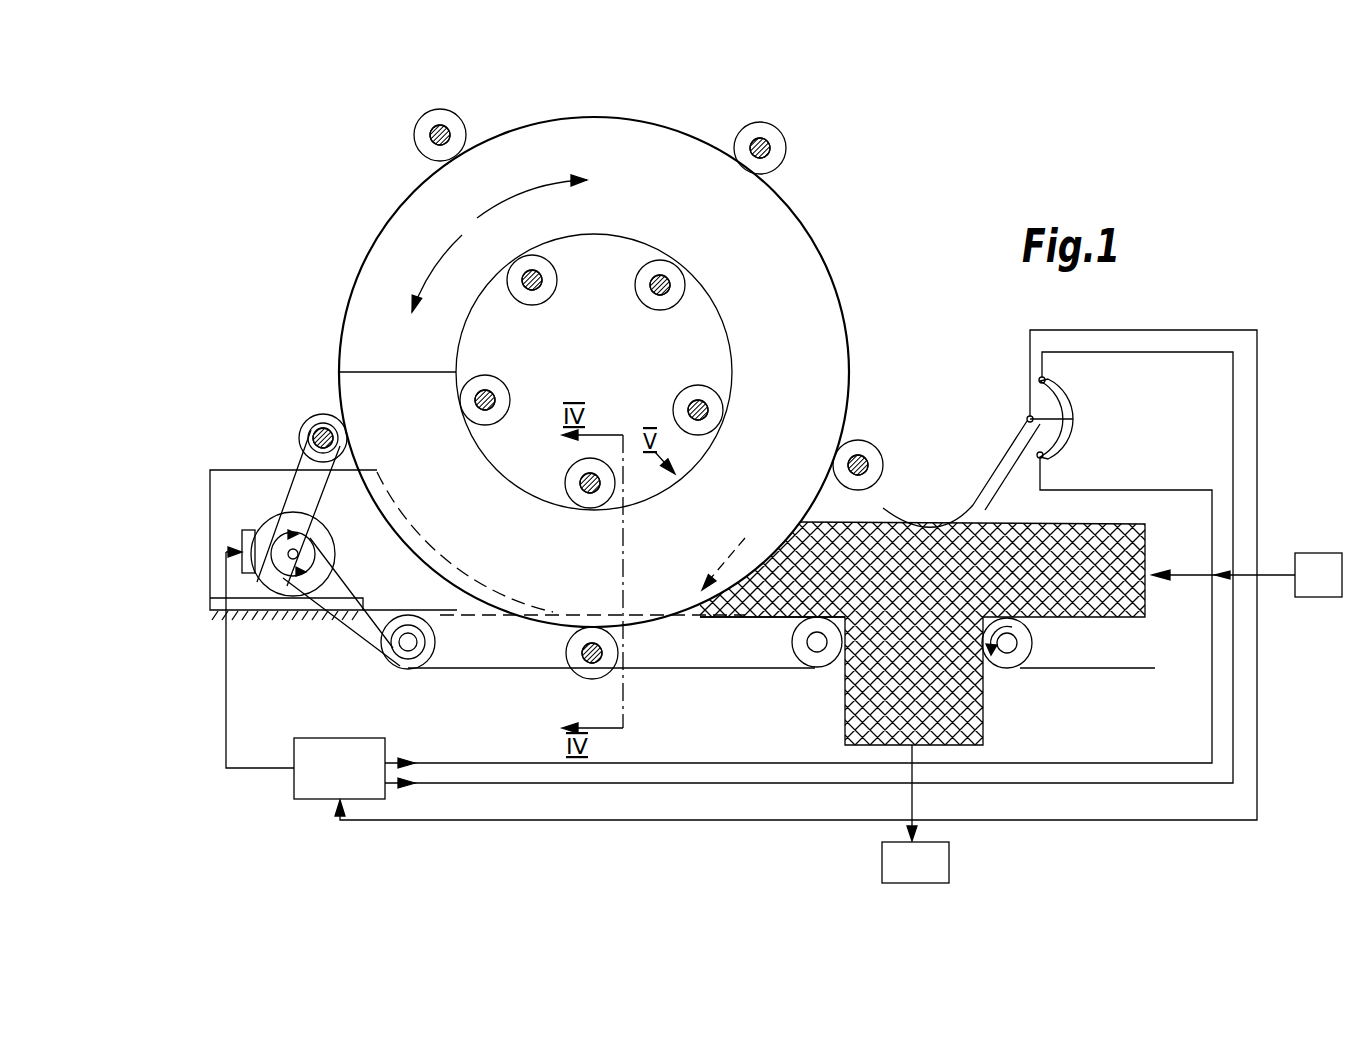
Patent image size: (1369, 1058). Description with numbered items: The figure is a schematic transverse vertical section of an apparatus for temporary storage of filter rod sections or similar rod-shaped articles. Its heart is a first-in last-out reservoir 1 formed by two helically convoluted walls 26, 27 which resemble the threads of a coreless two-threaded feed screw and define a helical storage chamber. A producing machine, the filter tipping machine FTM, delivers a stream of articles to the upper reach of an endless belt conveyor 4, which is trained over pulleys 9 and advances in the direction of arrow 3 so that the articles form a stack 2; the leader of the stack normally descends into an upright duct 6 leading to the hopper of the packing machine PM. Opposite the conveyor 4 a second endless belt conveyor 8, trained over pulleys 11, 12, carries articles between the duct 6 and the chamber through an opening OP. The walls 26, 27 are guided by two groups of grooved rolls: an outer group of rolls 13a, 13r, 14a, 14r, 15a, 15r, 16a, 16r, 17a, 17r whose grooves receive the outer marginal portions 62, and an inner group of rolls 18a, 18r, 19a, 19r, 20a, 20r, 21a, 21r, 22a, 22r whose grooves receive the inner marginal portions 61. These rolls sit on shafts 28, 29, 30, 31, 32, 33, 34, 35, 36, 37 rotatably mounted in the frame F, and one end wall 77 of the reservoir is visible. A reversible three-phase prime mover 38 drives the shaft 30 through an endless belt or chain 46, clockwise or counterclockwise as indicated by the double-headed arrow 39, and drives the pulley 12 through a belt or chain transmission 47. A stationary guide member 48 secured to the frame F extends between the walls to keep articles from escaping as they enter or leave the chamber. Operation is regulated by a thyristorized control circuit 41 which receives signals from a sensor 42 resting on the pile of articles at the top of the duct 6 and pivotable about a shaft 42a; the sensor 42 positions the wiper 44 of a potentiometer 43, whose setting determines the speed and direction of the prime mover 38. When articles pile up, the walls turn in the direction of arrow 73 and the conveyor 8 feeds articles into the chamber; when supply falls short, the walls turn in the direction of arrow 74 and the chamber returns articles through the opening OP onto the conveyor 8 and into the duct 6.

The reservoir 1 is at (350, 240).
The stack 2 is at (1138, 557).
The arrow 3 is at (1183, 580).
The endless belt conveyor 4 is at (1128, 670).
The duct 6 is at (968, 712).
The second endless belt conveyor 8 is at (735, 617).
The pulley 9 is at (1020, 661).
The pulley 11 is at (818, 667).
The pulley 12 is at (404, 670).
The grooved roll 13a is at (802, 132).
The grooved roll 13r is at (763, 133).
The grooved roll 14a is at (497, 125).
The grooved roll 14r is at (463, 136).
The grooved roll 15a is at (289, 416).
The grooved roll 15r is at (318, 415).
The grooved roll 16a is at (559, 673).
The grooved roll 16r is at (582, 660).
The grooved roll 17a is at (884, 433).
The grooved roll 17r is at (858, 447).
The inner roll 18a is at (713, 272).
The inner roll 18r is at (667, 268).
The inner roll 19a is at (579, 256).
The inner roll 19r is at (541, 262).
The inner roll 20a is at (510, 369).
The inner roll 20r is at (485, 380).
The inner roll 21a is at (545, 488).
The inner roll 21r is at (572, 480).
The inner roll 22a is at (665, 387).
The inner roll 22r is at (690, 396).
The helically convoluted wall 26 is at (634, 372).
The helically convoluted wall 27 is at (831, 254).
The shaft 28 is at (770, 152).
The shaft 29 is at (430, 142).
The shaft 30 is at (320, 434).
The shaft 31 is at (603, 660).
The shaft 32 is at (870, 468).
The shaft 33 is at (650, 284).
The shaft 34 is at (541, 278).
The shaft 35 is at (494, 394).
The shaft 36 is at (590, 490).
The shaft 37 is at (690, 411).
The reversible prime mover 38 is at (302, 592).
The double-headed arrow 39 is at (270, 585).
The control circuit 41 is at (339, 768).
The sensor 42 is at (1000, 460).
The shaft 42a is at (1029, 416).
The potentiometer 43 is at (1060, 400).
The wiper 44 is at (1038, 458).
The endless belt or chain 46 is at (318, 462).
The belt or chain transmission 47 is at (333, 632).
The stationary guide member 48 is at (455, 568).
The inner marginal portions 61 is at (736, 346).
The outer marginal portions 62 is at (848, 330).
The arrow 73 is at (585, 182).
The arrow 74 is at (405, 296).
The end wall 77 is at (368, 371).
The frame F is at (218, 613).
The opening OP is at (739, 553).
The packing machine PM is at (915, 814).
The filter tipping machine FTM is at (1247, 575).